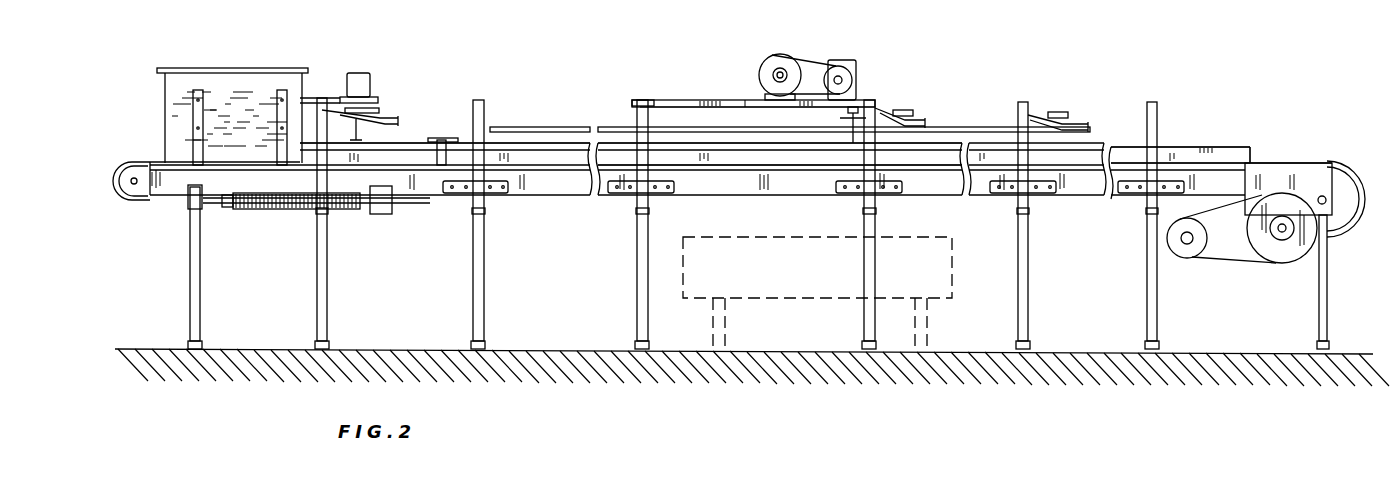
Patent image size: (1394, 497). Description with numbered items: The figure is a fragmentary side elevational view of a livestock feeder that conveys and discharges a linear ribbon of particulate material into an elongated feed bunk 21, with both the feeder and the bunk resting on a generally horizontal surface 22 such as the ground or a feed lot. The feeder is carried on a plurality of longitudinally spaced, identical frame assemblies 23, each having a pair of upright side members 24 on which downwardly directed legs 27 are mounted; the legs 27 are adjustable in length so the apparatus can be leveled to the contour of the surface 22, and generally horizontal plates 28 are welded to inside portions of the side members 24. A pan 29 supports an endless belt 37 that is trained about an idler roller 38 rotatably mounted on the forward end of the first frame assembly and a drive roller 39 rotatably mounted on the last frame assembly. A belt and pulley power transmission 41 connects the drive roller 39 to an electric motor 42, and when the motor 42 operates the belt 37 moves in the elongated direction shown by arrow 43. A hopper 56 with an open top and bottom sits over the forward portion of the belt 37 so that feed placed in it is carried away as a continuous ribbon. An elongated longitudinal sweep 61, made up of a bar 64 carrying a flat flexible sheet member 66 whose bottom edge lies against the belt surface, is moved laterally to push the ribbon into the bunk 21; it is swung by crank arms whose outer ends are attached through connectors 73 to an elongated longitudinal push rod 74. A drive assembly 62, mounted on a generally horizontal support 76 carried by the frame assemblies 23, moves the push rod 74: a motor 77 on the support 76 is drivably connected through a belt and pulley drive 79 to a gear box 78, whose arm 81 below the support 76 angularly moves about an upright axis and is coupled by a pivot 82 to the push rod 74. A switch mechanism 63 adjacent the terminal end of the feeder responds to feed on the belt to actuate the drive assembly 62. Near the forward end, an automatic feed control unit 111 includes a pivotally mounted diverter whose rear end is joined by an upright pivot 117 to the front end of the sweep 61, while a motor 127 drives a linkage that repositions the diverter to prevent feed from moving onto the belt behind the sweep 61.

The feed bunk 21 is at (808, 278).
The horizontal surface 22 is at (1090, 350).
The frame assemblies 23 is at (641, 98).
The upright side members 24 is at (633, 118).
The legs 27 is at (190, 314).
The horizontal plates 28 is at (453, 200).
The pan 29 is at (560, 198).
The endless belt 37 is at (140, 161).
The idler roller 38 is at (130, 205).
The drive roller 39 is at (1358, 154).
The belt and pulley power transmission 41 is at (1302, 262).
The electric motor 42 is at (1180, 258).
The arrow 43 is at (1262, 148).
The hopper 56 is at (212, 72).
The sweep 61 is at (1240, 142).
The drive assembly 62 is at (764, 54).
The switch mechanism 63 is at (1208, 138).
The bar 64 is at (702, 173).
The flexible sheet member 66 is at (748, 173).
The connector 73 is at (1048, 118).
The push rod 74 is at (727, 105).
The horizontal support 76 is at (742, 100).
The motor 77 is at (765, 66).
The gear box 78 is at (852, 62).
The belt and pulley drive 79 is at (836, 66).
The arm 81 is at (853, 124).
The pivot 82 is at (890, 112).
The feed control unit 111 is at (378, 104).
The upright pivot 117 is at (444, 138).
The motor 127 is at (358, 72).